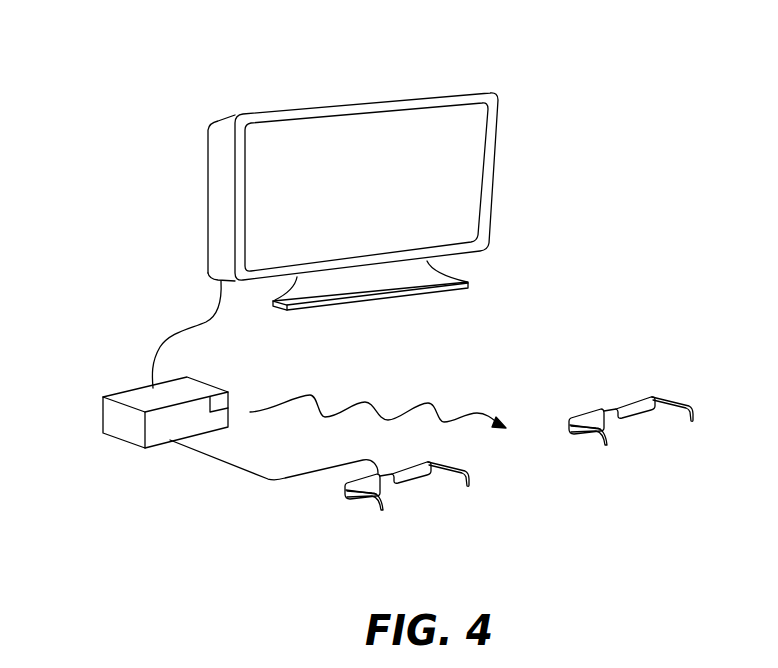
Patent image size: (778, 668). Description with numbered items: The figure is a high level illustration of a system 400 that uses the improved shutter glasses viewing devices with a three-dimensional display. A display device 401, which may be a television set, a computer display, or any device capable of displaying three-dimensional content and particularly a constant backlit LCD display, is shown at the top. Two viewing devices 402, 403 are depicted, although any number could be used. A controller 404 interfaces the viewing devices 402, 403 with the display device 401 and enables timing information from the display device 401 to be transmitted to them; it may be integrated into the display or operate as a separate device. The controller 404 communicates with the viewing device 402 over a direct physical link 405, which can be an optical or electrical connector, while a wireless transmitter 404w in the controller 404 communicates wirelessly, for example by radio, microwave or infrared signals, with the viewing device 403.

The system 400 is at (262, 67).
The display device 401 is at (207, 158).
The viewing device 402 is at (360, 497).
The viewing device 403 is at (597, 433).
The controller 404 is at (102, 417).
The wireless transmitter 404w is at (230, 398).
The direct physical link 405 is at (262, 477).